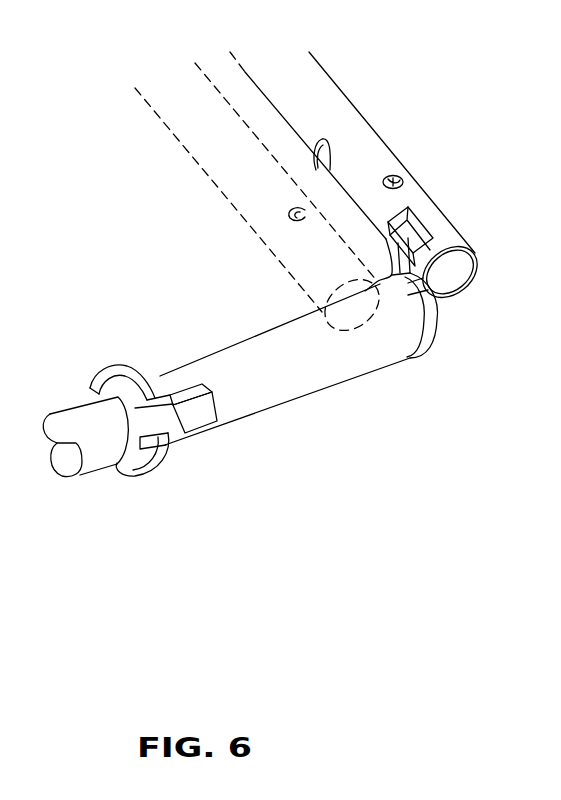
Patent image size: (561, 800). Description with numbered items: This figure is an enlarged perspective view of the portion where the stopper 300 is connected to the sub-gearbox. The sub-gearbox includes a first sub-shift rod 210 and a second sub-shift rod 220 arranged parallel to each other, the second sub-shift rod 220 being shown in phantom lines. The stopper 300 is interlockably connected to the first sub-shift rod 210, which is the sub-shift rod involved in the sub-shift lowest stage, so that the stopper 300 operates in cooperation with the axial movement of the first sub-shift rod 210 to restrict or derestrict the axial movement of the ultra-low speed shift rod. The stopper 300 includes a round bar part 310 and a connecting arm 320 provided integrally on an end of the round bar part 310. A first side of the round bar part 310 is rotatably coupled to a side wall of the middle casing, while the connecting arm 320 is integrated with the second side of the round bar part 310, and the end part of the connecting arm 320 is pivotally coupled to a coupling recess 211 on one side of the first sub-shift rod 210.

The first sub-shift rod 210 is at (322, 97).
The coupling recess 211 is at (406, 208).
The second sub-shift rod 220 is at (200, 140).
The stopper 300 is at (147, 490).
The round bar part 310 is at (357, 363).
The connecting arm 320 is at (388, 243).